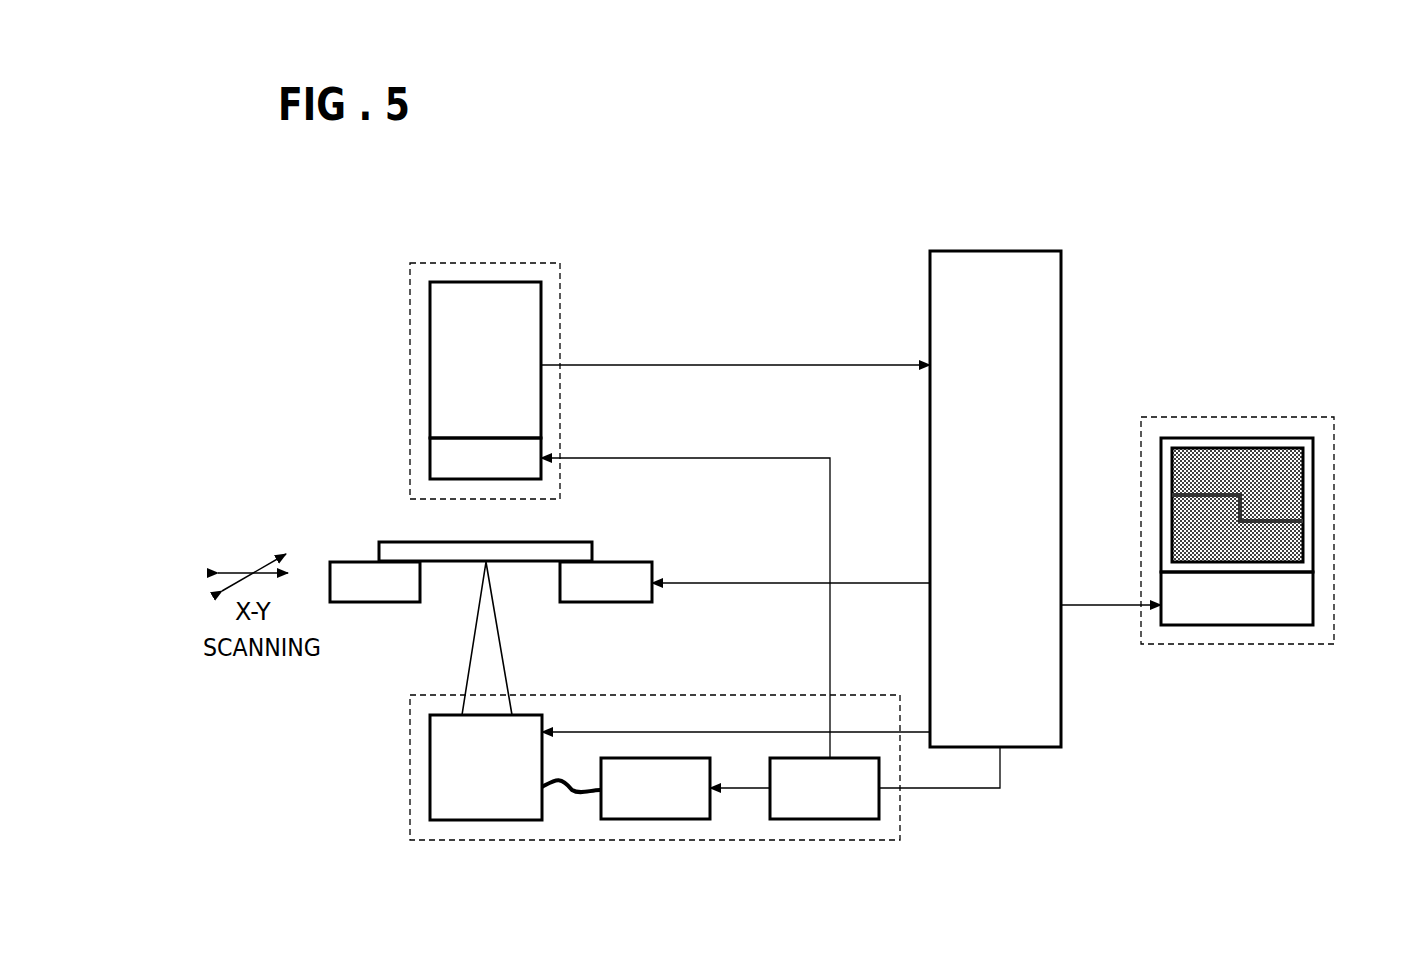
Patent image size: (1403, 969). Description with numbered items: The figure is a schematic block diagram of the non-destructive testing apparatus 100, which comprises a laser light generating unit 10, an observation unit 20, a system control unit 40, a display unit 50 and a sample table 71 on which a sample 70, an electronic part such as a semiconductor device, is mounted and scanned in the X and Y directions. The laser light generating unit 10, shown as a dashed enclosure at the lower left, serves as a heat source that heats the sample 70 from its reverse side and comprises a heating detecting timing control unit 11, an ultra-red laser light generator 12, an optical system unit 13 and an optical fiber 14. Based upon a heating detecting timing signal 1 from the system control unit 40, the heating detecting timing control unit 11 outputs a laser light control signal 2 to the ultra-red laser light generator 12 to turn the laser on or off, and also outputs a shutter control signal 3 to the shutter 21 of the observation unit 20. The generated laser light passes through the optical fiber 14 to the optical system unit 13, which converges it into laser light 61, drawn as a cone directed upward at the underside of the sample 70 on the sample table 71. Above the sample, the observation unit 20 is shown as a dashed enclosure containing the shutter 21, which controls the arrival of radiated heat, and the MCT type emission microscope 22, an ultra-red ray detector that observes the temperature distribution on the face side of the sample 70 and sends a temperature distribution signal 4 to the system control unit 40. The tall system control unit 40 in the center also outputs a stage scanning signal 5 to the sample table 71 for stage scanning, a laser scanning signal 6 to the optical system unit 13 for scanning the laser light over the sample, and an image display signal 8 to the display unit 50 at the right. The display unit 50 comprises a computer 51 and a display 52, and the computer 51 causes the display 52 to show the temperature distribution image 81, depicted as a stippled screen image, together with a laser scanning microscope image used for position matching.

The non-destructive testing apparatus 100 is at (1222, 201).
The observation unit 20 is at (481, 262).
The MCT type emission microscope 22 is at (430, 365).
The shutter 21 is at (430, 459).
The system control unit 40 is at (998, 250).
The display unit 50 is at (1235, 416).
The computer 51 is at (1229, 627).
The display 52 is at (1161, 483).
The temperature distribution image 81 is at (1290, 466).
The image display signal 8 is at (1098, 602).
The sample 70 is at (395, 541).
The sample table 71 is at (618, 560).
The laser light 61 is at (470, 652).
The laser light generating unit 10 is at (410, 767).
The optical system unit 13 is at (458, 822).
The optical fiber 14 is at (572, 792).
The ultra-red laser light generator 12 is at (658, 821).
The heating detecting timing control unit 11 is at (828, 821).
The temperature distribution signal 4 is at (729, 362).
The shutter control signal 3 is at (691, 456).
The stage scanning signal 5 is at (746, 580).
The laser scanning signal 6 is at (738, 730).
The laser light control signal 2 is at (744, 791).
The heating detecting timing signal 1 is at (952, 791).